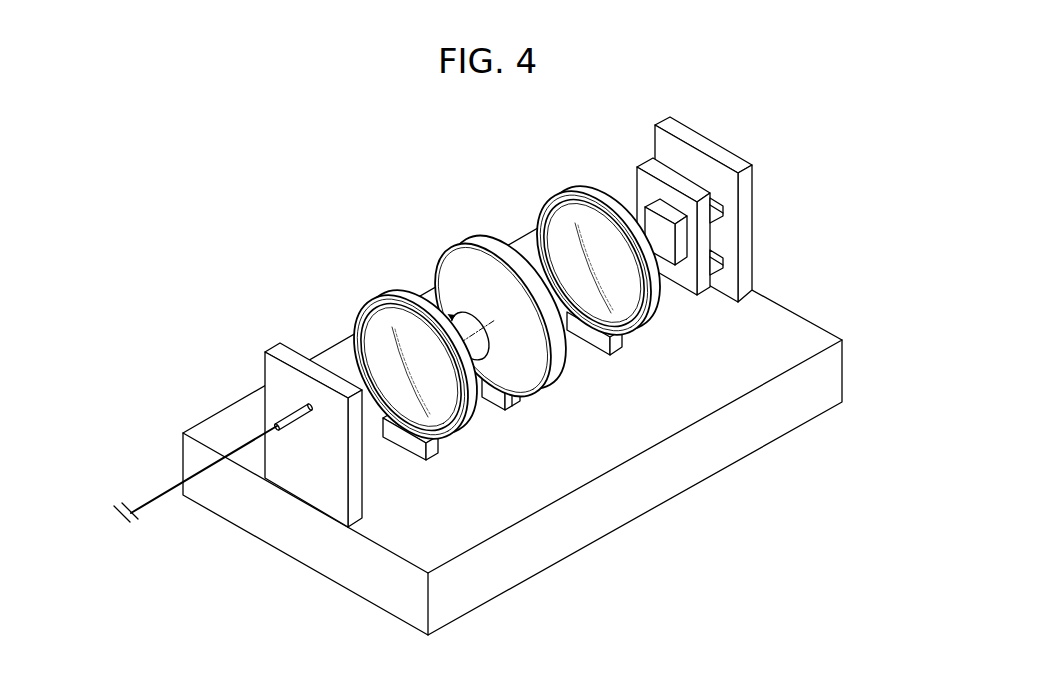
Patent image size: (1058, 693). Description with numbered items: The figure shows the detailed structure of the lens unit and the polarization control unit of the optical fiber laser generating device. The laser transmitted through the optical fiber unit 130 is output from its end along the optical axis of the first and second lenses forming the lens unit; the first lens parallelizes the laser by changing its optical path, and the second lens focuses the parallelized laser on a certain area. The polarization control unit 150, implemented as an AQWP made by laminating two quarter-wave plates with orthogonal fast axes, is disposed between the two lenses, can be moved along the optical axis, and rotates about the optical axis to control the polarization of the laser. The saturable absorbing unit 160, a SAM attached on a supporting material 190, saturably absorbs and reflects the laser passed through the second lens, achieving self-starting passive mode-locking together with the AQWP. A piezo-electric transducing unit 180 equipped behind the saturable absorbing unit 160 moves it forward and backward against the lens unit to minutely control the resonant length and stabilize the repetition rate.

The optical fiber unit 130 is at (247, 443).
The polarization control unit 150 is at (448, 272).
The saturable absorbing unit 160 is at (653, 218).
The piezo-electric transducing unit 180 is at (736, 207).
The supporting material 190 is at (705, 240).